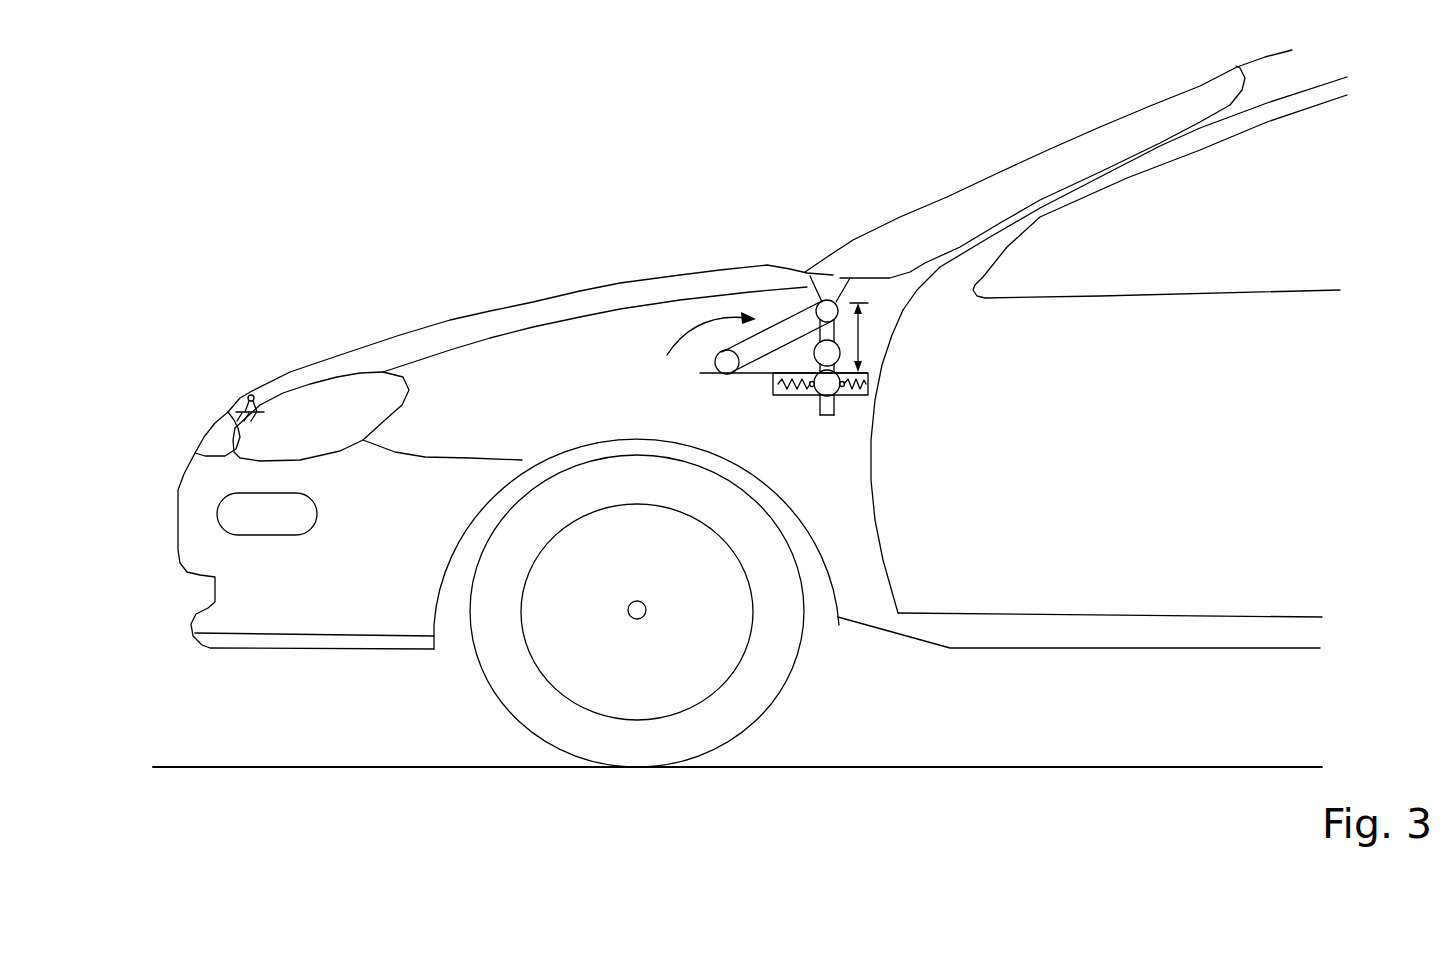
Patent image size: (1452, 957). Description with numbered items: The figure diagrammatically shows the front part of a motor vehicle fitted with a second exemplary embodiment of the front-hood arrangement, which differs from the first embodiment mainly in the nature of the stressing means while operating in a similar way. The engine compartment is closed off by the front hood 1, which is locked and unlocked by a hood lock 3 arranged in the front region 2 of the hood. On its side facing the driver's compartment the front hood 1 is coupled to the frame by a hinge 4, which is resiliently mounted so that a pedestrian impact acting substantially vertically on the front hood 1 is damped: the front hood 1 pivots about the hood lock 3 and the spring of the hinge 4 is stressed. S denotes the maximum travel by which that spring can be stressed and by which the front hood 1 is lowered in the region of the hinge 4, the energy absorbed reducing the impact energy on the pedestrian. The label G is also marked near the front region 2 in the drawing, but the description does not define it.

The front hood 1 is at (507, 318).
The front region of the front hood 2 is at (232, 403).
The hood lock 3 is at (252, 395).
The hinge 4 is at (756, 345).
The pivot joint G is at (240, 384).
The maximum travel S is at (867, 337).